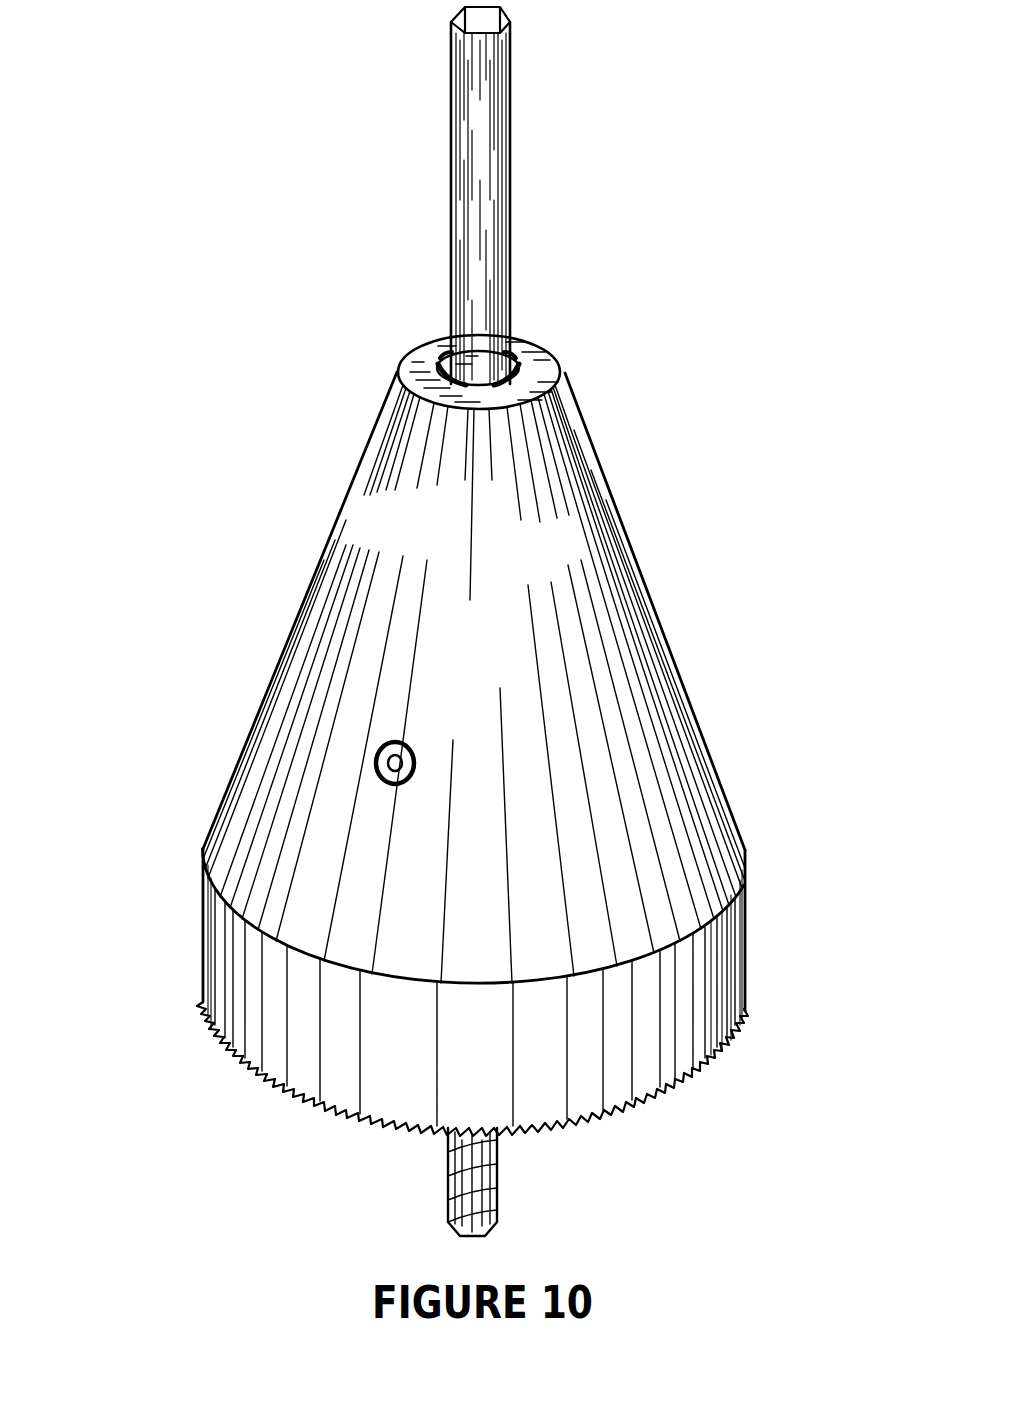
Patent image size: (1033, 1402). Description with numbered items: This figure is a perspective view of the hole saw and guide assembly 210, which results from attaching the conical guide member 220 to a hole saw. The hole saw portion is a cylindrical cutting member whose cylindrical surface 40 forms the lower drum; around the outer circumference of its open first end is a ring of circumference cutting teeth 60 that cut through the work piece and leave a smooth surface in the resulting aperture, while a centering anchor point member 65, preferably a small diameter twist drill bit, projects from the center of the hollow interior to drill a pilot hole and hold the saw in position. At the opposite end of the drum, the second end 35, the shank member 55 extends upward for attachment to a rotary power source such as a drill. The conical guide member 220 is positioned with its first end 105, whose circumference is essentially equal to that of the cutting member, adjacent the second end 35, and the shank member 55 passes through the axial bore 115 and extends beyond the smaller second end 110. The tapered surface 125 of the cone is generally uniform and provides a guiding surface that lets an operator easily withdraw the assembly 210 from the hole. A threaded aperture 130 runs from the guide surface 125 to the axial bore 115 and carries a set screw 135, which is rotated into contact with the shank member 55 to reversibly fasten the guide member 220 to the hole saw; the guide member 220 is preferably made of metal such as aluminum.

The hole saw and guide assembly 210 is at (695, 487).
The shank member 55 is at (508, 243).
The smaller second end 110 is at (542, 370).
The axial bore 115 is at (521, 355).
The tapered surface 125 is at (669, 638).
The conical guide member 220 is at (518, 661).
The threaded aperture 130 is at (378, 782).
The set screw 135 is at (383, 757).
The first end 105 is at (700, 862).
The second end 35 is at (710, 923).
The cylindrical surface 40 is at (256, 970).
The circumference cutting teeth 60 is at (279, 1088).
The centering anchor point member 65 is at (466, 1170).